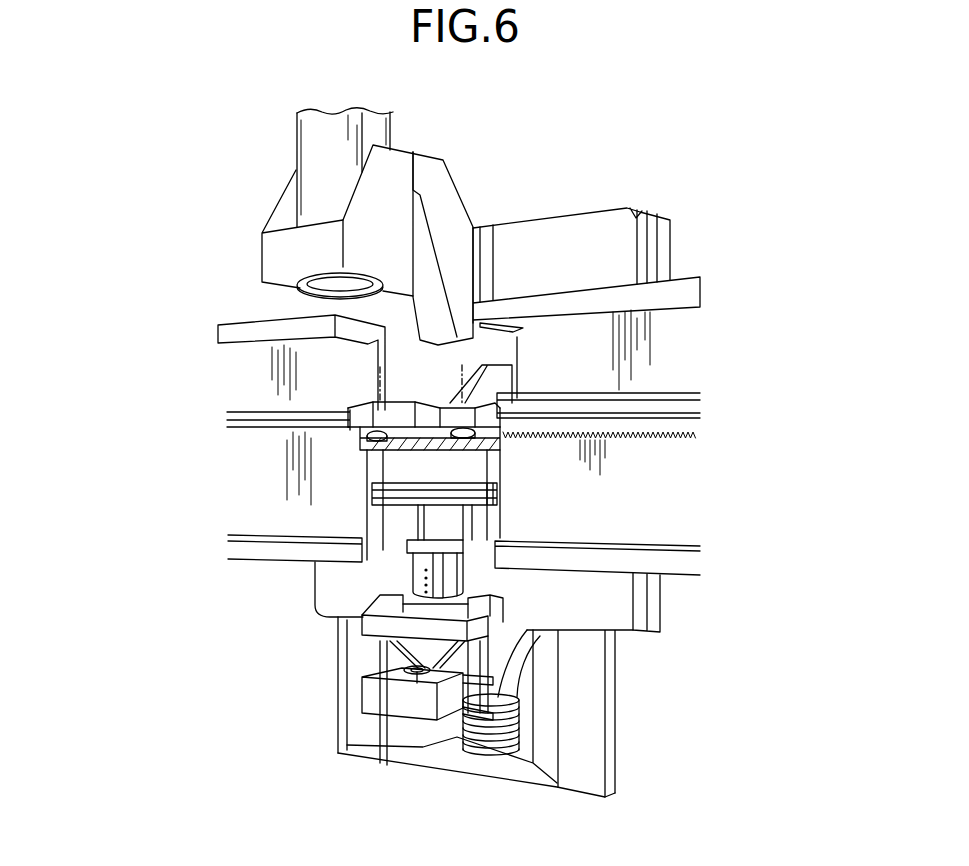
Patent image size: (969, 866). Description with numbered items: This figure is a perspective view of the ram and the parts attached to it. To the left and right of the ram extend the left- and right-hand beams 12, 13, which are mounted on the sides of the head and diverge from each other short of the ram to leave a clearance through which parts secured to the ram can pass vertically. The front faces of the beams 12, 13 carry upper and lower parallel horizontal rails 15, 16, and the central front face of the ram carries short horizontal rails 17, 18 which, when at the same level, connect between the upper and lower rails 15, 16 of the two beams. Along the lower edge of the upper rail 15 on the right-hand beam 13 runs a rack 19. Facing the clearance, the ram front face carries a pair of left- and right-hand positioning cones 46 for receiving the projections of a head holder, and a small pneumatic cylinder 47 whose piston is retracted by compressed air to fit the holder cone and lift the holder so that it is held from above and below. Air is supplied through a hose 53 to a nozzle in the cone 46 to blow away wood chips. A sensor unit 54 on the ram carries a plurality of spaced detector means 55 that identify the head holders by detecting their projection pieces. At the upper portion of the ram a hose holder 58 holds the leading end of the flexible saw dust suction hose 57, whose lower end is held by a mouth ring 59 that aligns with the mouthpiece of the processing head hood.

The left-hand beam 12 is at (245, 332).
The right-hand beam 13 is at (682, 290).
The upper rail 15 is at (248, 412).
The lower rail 16 is at (263, 553).
The short horizontal rail 17 is at (473, 447).
The short horizontal rail 18 is at (380, 627).
The rack 19 is at (663, 437).
The positioning cone 46 is at (367, 450).
The pneumatic cylinder 47 is at (405, 707).
The hose 53 is at (470, 390).
The sensor unit 54 is at (450, 572).
The detector means 55 is at (413, 590).
The saw dust suction hose 57 is at (313, 165).
The hose holder 58 is at (387, 193).
The mouth ring 59 is at (307, 275).